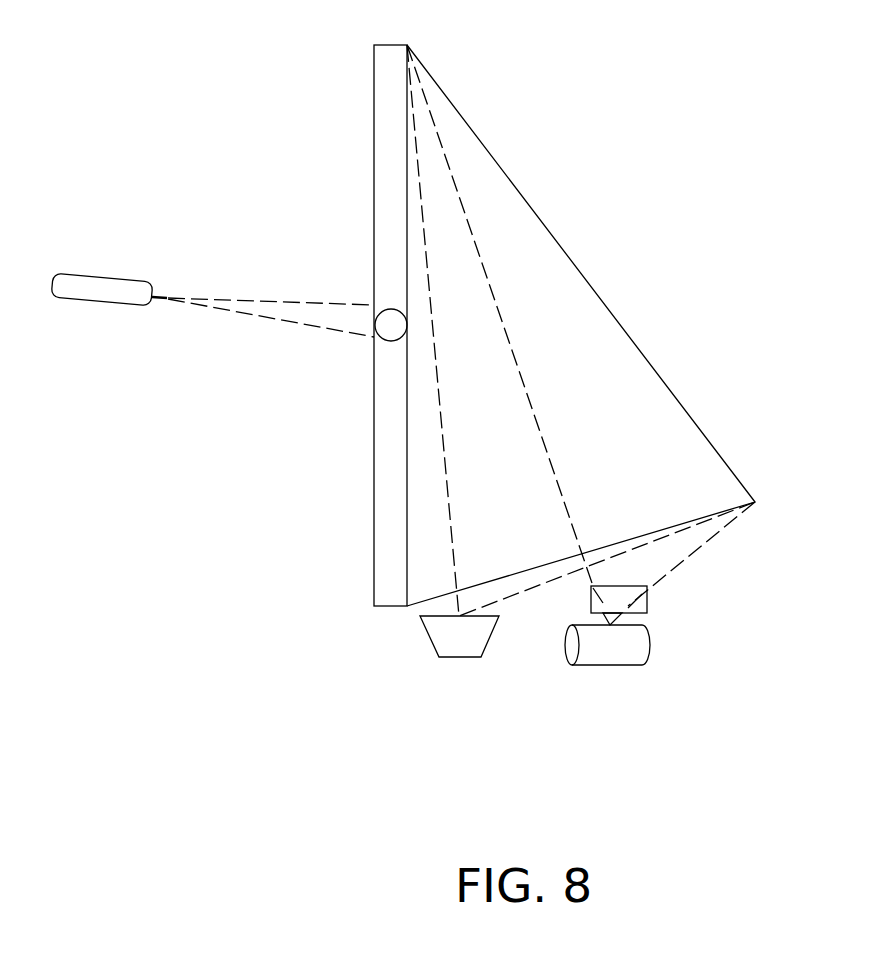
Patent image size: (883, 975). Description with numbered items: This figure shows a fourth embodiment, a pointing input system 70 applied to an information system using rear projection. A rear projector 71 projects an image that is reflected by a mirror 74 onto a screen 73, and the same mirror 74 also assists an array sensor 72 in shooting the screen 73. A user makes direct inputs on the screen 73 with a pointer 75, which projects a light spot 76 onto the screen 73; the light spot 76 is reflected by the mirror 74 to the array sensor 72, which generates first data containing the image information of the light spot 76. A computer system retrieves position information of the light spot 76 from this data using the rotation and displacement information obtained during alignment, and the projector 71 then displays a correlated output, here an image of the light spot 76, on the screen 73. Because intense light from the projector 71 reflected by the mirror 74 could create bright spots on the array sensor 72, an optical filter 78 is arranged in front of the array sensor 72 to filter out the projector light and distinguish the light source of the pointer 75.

The pointing input system 70 is at (750, 110).
The rear projector 71 is at (473, 650).
The array sensor 72 is at (638, 657).
The screen 73 is at (387, 413).
The mirror 74 is at (627, 330).
The pointer 75 is at (102, 275).
The light spot 76 is at (390, 308).
The optical filter 78 is at (640, 605).